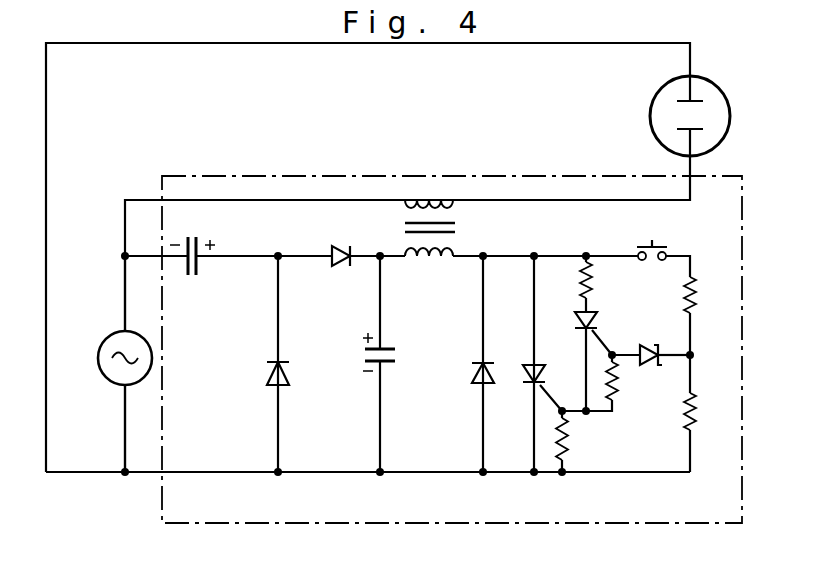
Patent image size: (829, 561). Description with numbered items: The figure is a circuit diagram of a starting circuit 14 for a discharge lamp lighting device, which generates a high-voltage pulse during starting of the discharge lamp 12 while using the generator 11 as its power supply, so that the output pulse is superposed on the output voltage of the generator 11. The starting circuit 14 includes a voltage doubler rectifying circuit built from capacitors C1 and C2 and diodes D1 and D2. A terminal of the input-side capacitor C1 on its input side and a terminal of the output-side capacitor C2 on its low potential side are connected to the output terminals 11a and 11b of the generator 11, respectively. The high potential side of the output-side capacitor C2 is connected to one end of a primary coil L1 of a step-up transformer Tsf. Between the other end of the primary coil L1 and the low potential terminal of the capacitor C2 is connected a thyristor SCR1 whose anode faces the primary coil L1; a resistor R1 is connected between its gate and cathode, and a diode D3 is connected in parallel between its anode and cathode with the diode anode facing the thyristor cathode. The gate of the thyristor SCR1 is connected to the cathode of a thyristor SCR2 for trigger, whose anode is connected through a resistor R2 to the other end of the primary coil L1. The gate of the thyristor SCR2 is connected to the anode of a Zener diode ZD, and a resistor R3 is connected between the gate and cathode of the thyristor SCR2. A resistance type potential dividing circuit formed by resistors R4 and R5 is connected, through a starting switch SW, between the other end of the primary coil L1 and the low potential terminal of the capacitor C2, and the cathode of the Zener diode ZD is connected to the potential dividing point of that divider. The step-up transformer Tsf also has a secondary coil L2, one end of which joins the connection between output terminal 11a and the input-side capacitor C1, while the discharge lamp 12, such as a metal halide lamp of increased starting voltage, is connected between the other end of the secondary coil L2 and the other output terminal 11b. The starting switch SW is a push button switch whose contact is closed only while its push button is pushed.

The generator 11 is at (100, 371).
The output terminal 11a is at (125, 312).
The output terminal 11b is at (125, 431).
The discharge lamp 12 is at (718, 88).
The starting circuit 14 is at (729, 172).
The input-side capacitor C1 is at (195, 278).
The output-side capacitor C2 is at (396, 356).
The diode D1 is at (287, 371).
The diode D2 is at (345, 263).
The diode D3 is at (470, 380).
The primary coil L1 is at (432, 262).
The secondary coil L2 is at (428, 197).
The step-up transformer Tsf is at (465, 228).
The resistor R1 is at (563, 430).
The resistor R2 is at (580, 292).
The resistor R3 is at (615, 377).
The resistor R4 is at (694, 305).
The resistor R5 is at (694, 430).
The thyristor SCR1 is at (528, 385).
The thyristor for trigger SCR2 is at (594, 322).
The starting switch SW is at (664, 241).
The Zener diode ZD is at (645, 347).